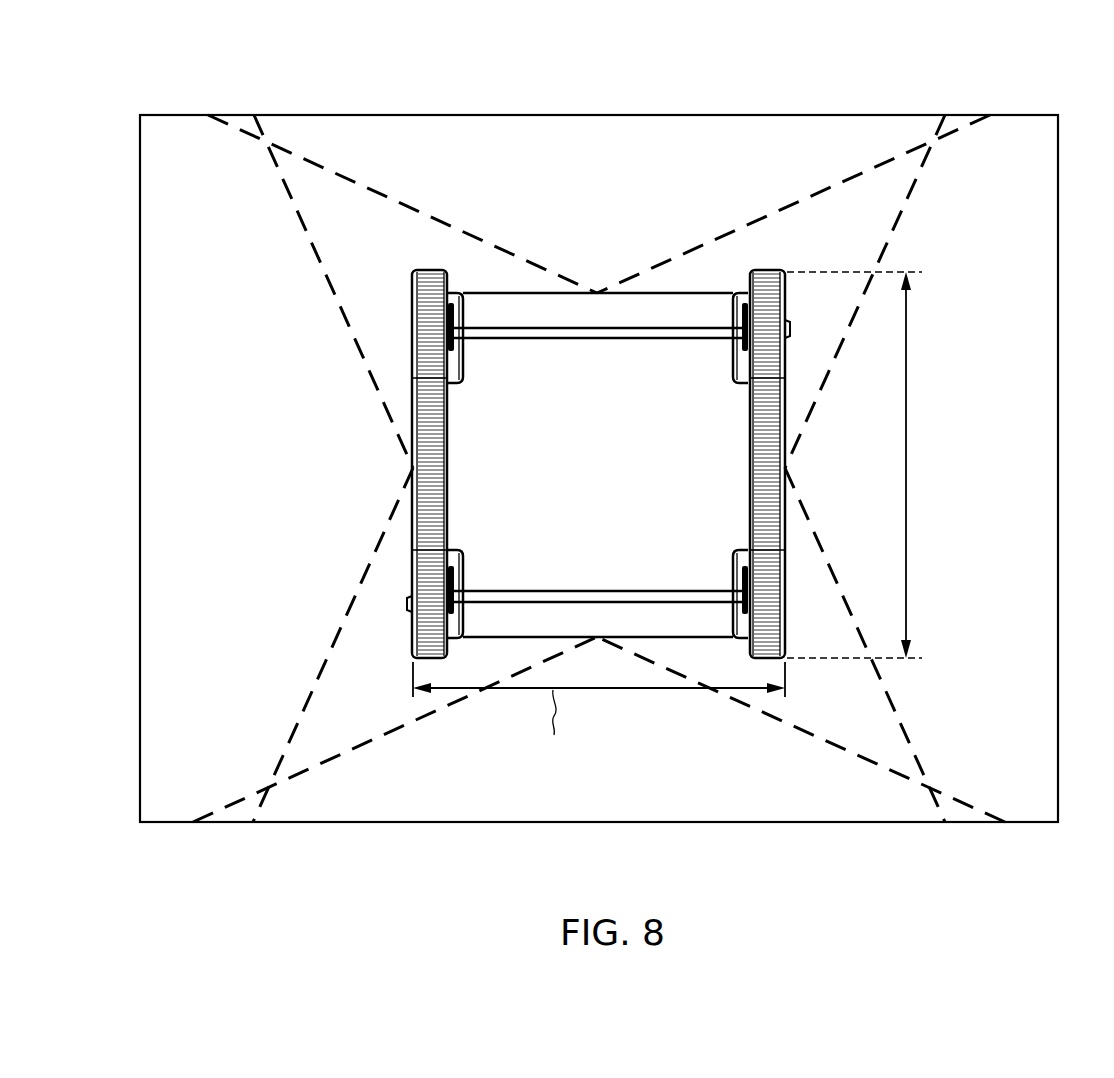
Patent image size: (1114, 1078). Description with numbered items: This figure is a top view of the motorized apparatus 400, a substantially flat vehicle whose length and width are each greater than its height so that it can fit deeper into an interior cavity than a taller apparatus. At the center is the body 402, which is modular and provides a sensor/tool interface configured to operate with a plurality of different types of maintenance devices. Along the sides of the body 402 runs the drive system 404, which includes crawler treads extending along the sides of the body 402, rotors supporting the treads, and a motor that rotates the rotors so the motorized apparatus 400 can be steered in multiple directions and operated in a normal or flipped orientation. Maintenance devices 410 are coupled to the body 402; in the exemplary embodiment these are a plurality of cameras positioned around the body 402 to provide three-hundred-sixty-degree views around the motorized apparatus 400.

The motorized apparatus 400 is at (866, 79).
The body 402 is at (650, 368).
The drive system 404 is at (790, 608).
The maintenance device 410 is at (597, 292).